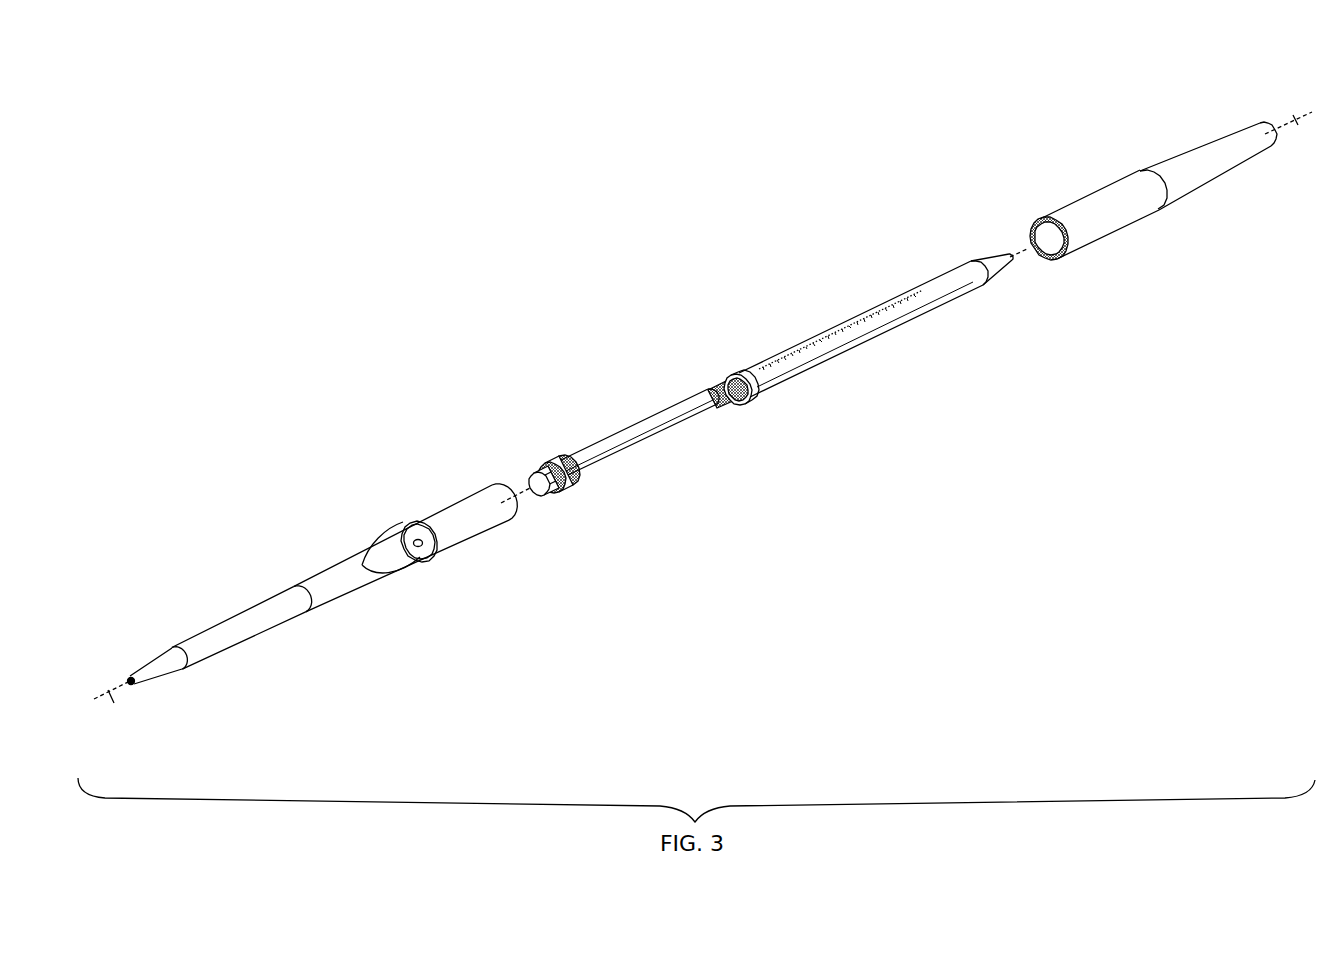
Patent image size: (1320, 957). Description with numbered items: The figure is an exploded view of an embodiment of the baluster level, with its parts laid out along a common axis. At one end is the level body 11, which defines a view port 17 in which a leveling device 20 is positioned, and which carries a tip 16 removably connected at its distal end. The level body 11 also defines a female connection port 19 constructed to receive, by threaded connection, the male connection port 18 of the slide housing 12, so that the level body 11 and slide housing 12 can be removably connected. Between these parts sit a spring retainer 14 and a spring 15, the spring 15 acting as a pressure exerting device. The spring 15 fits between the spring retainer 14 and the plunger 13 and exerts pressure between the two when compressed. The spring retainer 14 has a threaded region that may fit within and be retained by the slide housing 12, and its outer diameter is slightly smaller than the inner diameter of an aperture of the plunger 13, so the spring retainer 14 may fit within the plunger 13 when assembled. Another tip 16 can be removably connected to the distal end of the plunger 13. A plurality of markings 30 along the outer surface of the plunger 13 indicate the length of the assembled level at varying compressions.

The level body 11 is at (332, 603).
The slide housing 12 is at (1116, 191).
The plunger 13 is at (876, 305).
The spring retainer 14 is at (632, 450).
The spring 15 is at (733, 403).
The tip 16 is at (110, 697).
The view port 17 is at (393, 557).
The male connection port 18 is at (1030, 231).
The female connection port 19 is at (521, 512).
The leveling device 20 is at (408, 543).
The markings 30 is at (845, 329).